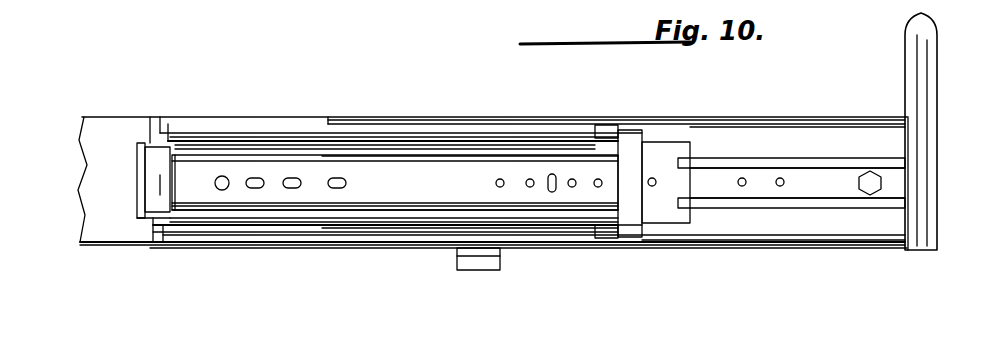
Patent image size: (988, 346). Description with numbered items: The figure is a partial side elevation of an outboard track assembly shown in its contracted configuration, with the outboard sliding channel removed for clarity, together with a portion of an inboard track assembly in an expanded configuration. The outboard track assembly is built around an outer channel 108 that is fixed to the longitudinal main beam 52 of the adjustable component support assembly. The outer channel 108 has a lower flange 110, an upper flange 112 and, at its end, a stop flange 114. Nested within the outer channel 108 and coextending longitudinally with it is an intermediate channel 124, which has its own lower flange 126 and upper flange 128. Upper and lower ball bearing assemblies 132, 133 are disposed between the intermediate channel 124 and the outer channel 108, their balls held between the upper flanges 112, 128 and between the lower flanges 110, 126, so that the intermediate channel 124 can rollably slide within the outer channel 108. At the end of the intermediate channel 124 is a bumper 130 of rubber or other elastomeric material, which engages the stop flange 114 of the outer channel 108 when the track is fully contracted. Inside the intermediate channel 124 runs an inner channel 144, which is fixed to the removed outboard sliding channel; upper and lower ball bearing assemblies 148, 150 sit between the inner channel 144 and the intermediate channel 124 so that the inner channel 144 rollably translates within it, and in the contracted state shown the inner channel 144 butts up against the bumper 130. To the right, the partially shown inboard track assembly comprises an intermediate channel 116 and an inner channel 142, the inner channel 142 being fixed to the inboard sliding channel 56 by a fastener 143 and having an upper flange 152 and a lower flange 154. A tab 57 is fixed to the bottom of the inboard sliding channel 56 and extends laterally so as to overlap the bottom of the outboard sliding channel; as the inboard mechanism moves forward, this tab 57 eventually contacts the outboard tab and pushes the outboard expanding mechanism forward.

The longitudinal main beam 52 is at (101, 243).
The inboard sliding channel 56 is at (831, 245).
The tab 57 is at (487, 270).
The outer channel 108 is at (224, 255).
The lower flange 110 is at (153, 242).
The upper flange 112 is at (212, 137).
The stop flange 114 is at (138, 187).
The intermediate channel 116 is at (673, 233).
The intermediate channel 124 is at (143, 238).
The lower flange 126 is at (246, 247).
The upper flange 128 is at (270, 142).
The bumper 130 is at (152, 140).
The upper ball bearing assembly 132 is at (313, 141).
The lower ball bearing assembly 133 is at (313, 226).
The inner channel 142 is at (740, 210).
The fastener 143 is at (873, 193).
The inner channel 144 is at (284, 218).
The upper ball bearing assembly 148 is at (495, 150).
The lower ball bearing assembly 150 is at (313, 200).
The upper flange 152 is at (818, 152).
The lower flange 154 is at (807, 208).